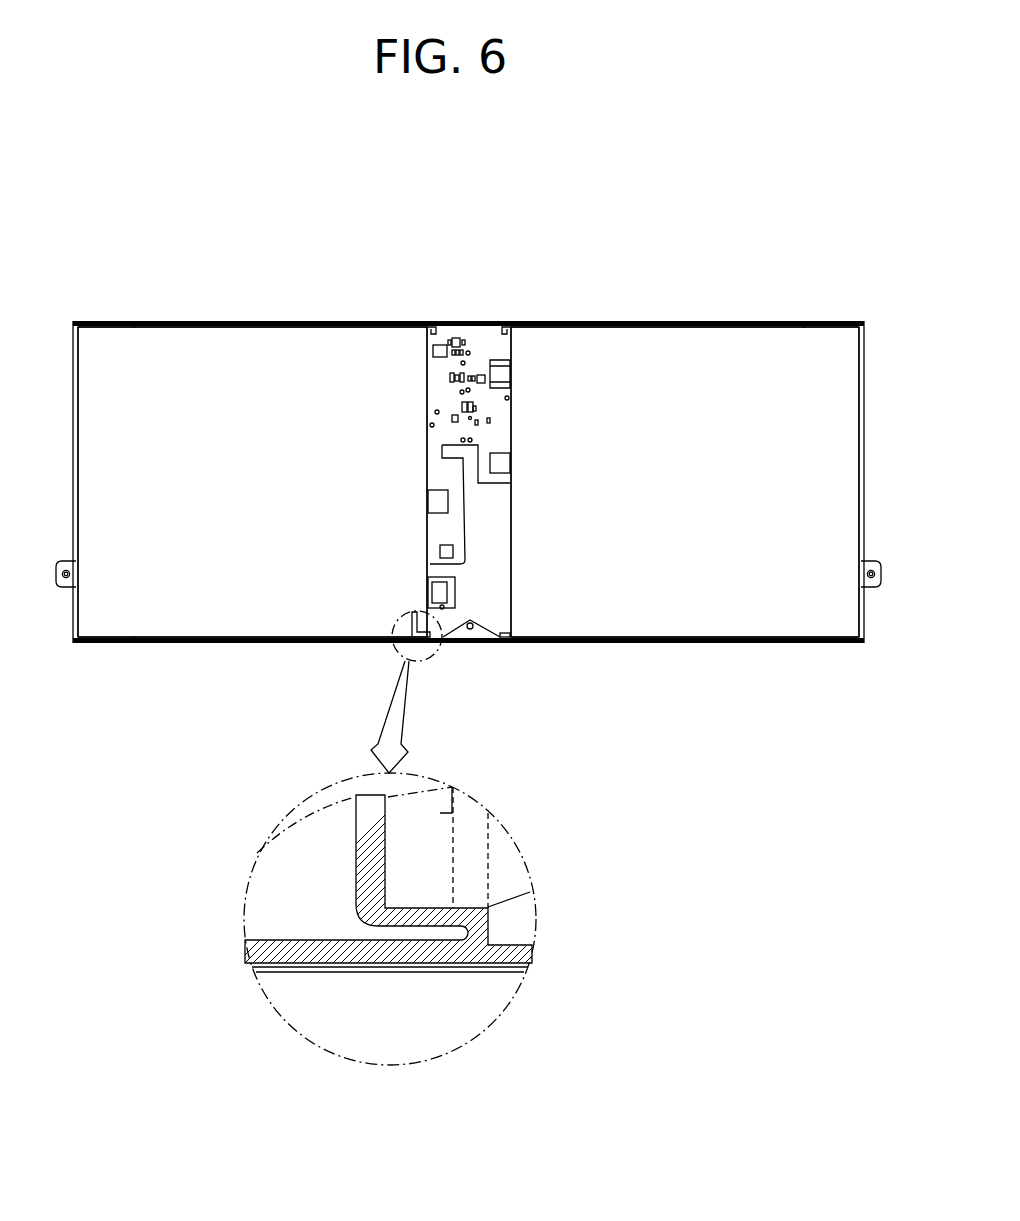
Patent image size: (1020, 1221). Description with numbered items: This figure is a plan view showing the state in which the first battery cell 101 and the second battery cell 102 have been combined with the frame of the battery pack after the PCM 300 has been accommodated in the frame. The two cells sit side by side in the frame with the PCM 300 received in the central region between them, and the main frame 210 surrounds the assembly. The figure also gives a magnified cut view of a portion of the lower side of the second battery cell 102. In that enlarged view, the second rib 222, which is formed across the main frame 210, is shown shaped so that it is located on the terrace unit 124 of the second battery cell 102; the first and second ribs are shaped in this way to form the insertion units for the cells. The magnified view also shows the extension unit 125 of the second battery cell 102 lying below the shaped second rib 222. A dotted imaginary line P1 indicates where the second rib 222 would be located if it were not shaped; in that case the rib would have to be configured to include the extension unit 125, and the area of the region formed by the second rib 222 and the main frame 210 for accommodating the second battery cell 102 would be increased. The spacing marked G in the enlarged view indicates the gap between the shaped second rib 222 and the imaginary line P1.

The first battery cell 101 is at (797, 357).
The second battery cell 102 is at (178, 356).
The main frame 210 is at (602, 322).
The PCM 300 is at (487, 343).
The terrace unit 124 is at (430, 792).
The extension unit 125 is at (403, 935).
The second rib 222 is at (365, 862).
The imaginary line P1 is at (471, 858).
The gap G is at (453, 878).